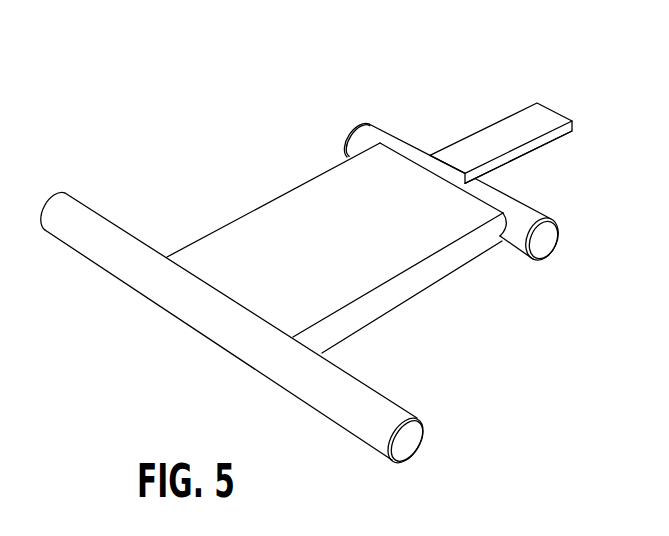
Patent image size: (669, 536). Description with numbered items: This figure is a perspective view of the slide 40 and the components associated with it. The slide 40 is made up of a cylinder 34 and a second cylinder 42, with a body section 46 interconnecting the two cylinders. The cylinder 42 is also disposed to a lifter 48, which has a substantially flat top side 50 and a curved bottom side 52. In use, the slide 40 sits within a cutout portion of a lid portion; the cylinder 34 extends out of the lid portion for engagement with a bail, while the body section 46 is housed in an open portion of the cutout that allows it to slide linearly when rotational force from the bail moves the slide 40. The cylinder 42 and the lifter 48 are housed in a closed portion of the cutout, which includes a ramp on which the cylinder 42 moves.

The cylinder 34 is at (405, 435).
The slide 40 is at (177, 114).
The cylinder 42 is at (540, 235).
The body section 46 is at (413, 278).
The lifter 48 is at (539, 102).
The flat top side 50 is at (497, 130).
The curved bottom side 52 is at (545, 155).